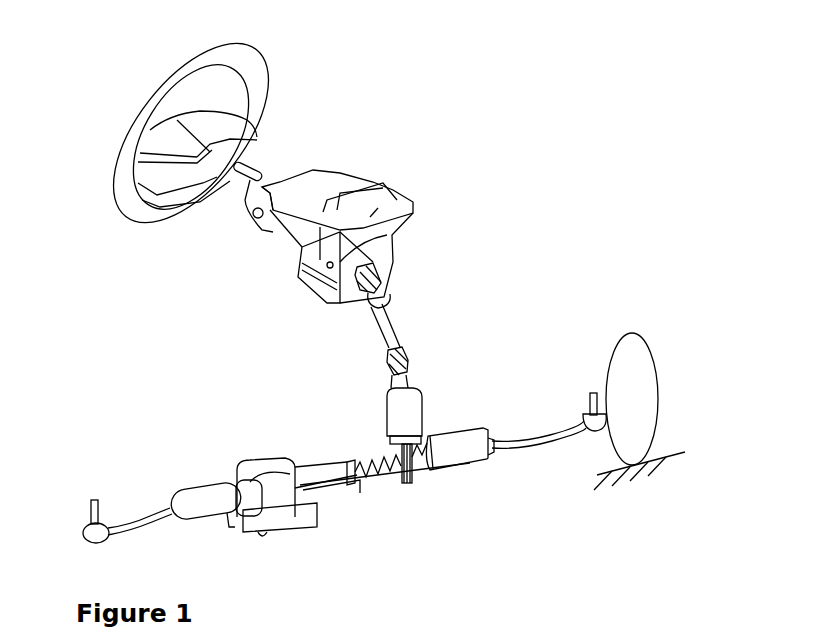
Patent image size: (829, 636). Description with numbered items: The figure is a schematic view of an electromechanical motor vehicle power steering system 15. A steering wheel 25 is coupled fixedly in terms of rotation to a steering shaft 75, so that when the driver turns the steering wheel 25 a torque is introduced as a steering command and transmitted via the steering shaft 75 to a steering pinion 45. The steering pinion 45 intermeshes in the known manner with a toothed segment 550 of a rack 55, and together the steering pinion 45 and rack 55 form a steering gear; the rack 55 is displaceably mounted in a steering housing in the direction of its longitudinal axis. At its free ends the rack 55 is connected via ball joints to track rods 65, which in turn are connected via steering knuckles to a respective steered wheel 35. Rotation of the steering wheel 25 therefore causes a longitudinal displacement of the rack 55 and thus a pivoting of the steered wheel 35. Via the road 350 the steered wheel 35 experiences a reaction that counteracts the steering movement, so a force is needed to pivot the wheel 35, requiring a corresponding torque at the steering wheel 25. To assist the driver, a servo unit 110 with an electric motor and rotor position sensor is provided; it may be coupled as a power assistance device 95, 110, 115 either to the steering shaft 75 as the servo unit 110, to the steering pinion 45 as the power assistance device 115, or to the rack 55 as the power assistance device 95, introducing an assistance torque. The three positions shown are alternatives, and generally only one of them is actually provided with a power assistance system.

The electromechanical motor vehicle power steering system 15 is at (471, 74).
The steering wheel 25 is at (262, 73).
The steering shaft 75 is at (257, 170).
The servo unit 110 is at (288, 254).
The power assistance device 115 is at (413, 415).
The rack 55 is at (390, 473).
The toothed segment 550 is at (355, 483).
The steering pinion 45 is at (404, 482).
The power assistance device 95 is at (262, 462).
The track rods 65 is at (527, 444).
The steered wheel 35 is at (633, 350).
The road 350 is at (663, 452).